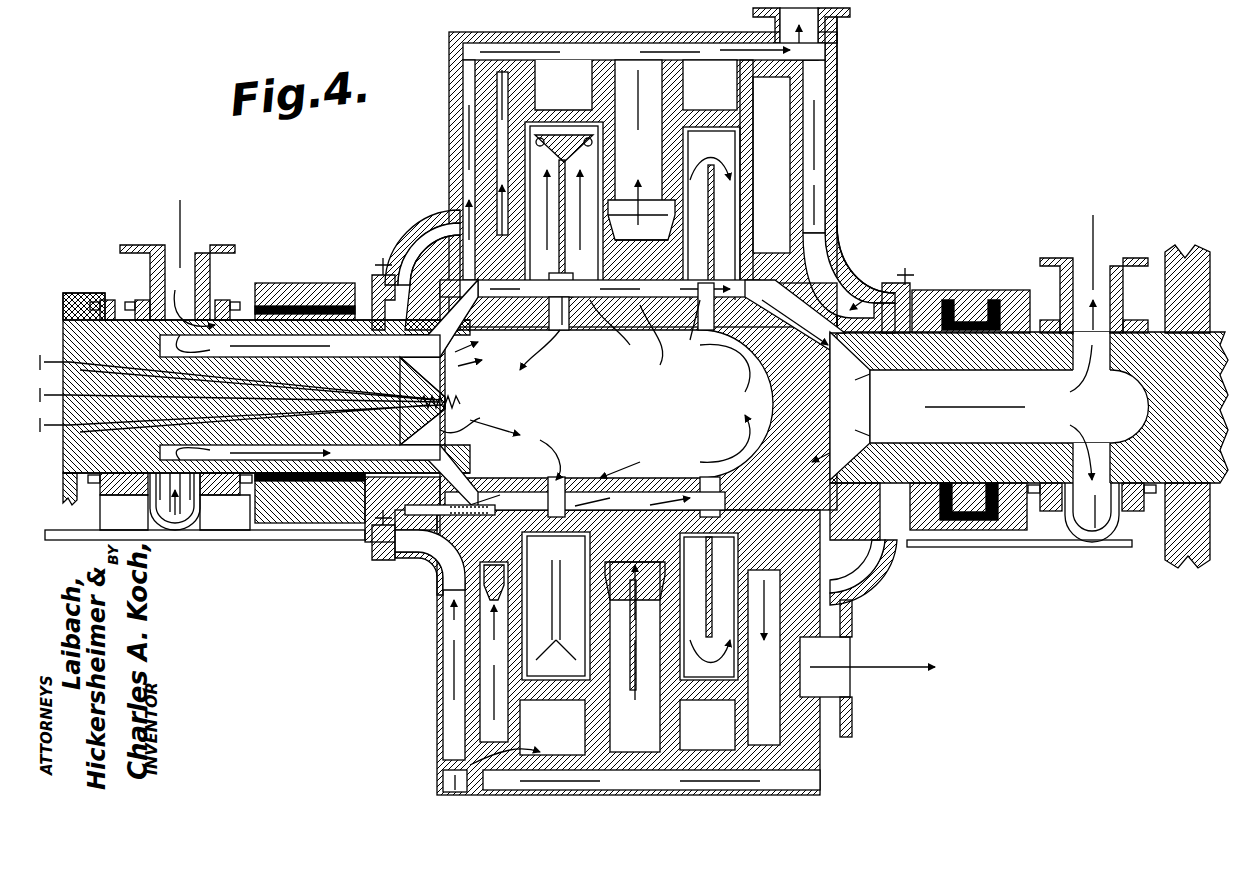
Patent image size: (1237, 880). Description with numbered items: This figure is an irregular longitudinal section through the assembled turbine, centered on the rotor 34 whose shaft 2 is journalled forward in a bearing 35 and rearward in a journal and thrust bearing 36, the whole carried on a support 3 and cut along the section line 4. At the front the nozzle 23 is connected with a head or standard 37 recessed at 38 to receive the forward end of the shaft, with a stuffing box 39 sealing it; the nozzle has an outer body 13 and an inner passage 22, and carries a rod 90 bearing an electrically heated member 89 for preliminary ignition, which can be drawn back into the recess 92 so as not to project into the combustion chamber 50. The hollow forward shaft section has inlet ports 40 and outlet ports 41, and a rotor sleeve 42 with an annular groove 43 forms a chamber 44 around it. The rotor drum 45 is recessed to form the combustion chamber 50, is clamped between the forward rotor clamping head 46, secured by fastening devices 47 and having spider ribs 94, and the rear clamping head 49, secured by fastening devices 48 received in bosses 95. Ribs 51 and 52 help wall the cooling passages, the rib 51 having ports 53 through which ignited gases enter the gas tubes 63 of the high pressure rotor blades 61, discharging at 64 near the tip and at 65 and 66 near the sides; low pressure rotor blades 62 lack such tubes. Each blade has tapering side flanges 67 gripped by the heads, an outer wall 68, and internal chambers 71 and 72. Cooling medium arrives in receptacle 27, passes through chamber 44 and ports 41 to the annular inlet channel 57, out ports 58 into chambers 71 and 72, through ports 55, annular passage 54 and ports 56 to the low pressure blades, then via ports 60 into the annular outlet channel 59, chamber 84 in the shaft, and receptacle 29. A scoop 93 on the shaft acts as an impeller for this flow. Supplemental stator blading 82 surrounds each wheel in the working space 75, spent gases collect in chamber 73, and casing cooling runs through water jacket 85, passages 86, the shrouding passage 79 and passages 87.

The rotor shaft 2 is at (1029, 407).
The support column 3 is at (1168, 552).
The section line 4 is at (632, 20).
The nozzle body 13 is at (280, 340).
The nozzle passage 22 is at (285, 380).
The nozzle 23 is at (434, 401).
The receptacle 27 is at (183, 525).
The receptacle 29 is at (1085, 535).
The rotor 34 is at (430, 245).
The bearing 35 is at (302, 295).
The journal and thrust bearing 36 is at (965, 290).
The head or standard 37 is at (70, 295).
The recess 38 is at (90, 300).
The stuffing box 39 is at (118, 501).
The inlet ports 40 is at (177, 263).
The outlet ports 41 is at (484, 341).
The rotor sleeve 42 is at (489, 357).
The annular groove 43 is at (298, 460).
The chamber 44 is at (497, 431).
The rotor drum 45 is at (638, 460).
The rotor clamping head 46 is at (400, 262).
The fastening devices 47 is at (395, 548).
The fastening devices 48 is at (862, 588).
The rear clamping head 49 is at (870, 255).
The combustion chamber 50 is at (638, 396).
The rib 51 is at (565, 478).
The rib 52 is at (746, 238).
The ports 53 is at (557, 350).
The annular passage 54 is at (650, 341).
The ports 55 is at (614, 327).
The ports 56 is at (699, 330).
The annular inlet channel 57 is at (582, 318).
The ports 58 is at (549, 305).
The annular outlet channel 59 is at (829, 309).
The ports 60 is at (716, 300).
The high pressure rotor blades 61 is at (600, 130).
The low pressure rotor blades 62 is at (740, 150).
The gas tubes 63 is at (562, 200).
The discharge opening 64 is at (562, 135).
The discharge opening 65 is at (470, 132).
The discharge opening 66 is at (590, 144).
The tapering side flanges 67 is at (680, 270).
The housing wall 68 is at (825, 130).
The chamber 71 is at (546, 210).
The chamber 72 is at (585, 210).
The chamber 73 is at (769, 411).
The working space 75 is at (660, 690).
The passage 79 is at (635, 600).
The supplemental stator blading 82 is at (712, 104).
The chamber 84 is at (1009, 408).
The casing water jacket 85 is at (631, 662).
The passages 86 is at (671, 424).
The passages 87 is at (641, 150).
The electrically heated member 89 is at (460, 402).
The rod 90 is at (240, 393).
The recess 92 is at (455, 425).
The scoop 93 is at (226, 501).
The ribs 94 is at (410, 512).
The bosses 95 is at (876, 478).